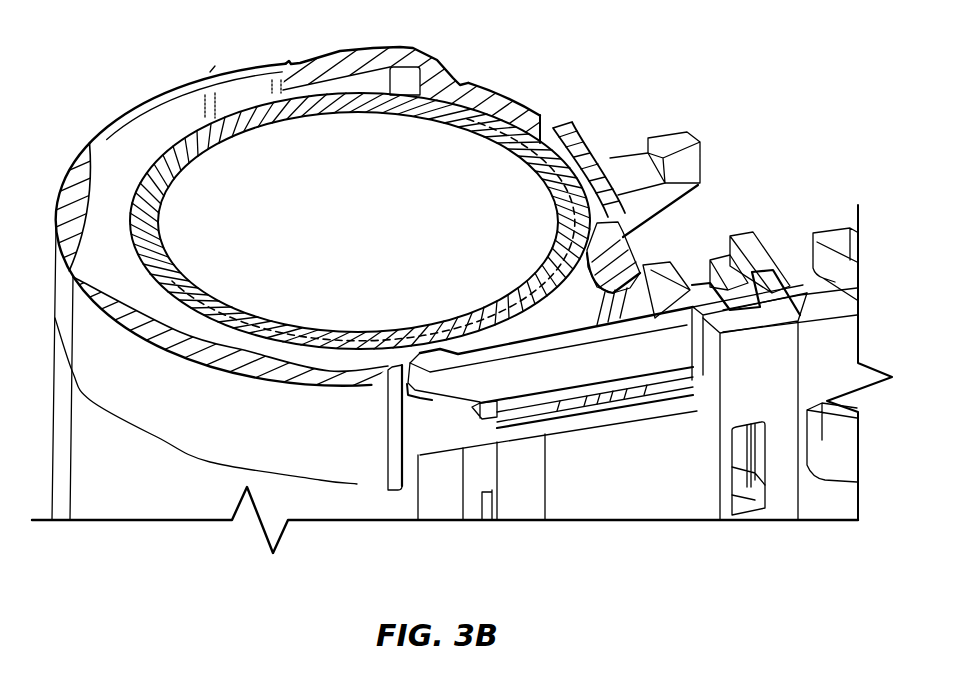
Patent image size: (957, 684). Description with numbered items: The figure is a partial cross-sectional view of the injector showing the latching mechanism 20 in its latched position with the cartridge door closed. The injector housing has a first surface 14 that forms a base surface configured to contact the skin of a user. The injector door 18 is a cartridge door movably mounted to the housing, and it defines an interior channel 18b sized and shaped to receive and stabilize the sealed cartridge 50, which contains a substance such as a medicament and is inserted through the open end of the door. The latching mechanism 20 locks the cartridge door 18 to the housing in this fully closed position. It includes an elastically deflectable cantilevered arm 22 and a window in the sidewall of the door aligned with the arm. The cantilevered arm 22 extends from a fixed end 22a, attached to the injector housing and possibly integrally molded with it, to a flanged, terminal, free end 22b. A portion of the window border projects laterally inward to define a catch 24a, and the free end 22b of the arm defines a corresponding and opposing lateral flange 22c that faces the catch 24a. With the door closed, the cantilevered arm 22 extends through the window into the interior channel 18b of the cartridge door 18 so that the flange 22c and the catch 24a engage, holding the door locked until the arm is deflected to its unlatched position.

The first surface 14 is at (685, 478).
The injector door 18 is at (157, 96).
The interior channel 18b is at (128, 168).
The latching mechanism 20 is at (487, 346).
The cantilevered arm 22 is at (557, 378).
The fixed end 22a is at (695, 350).
The free end 22b is at (405, 400).
The lateral flange 22c is at (465, 420).
The catch 24a is at (490, 418).
The cartridge 50 is at (248, 100).